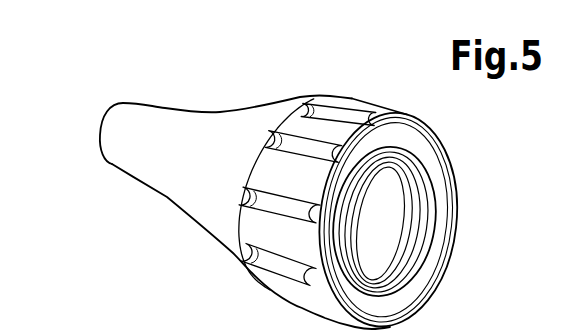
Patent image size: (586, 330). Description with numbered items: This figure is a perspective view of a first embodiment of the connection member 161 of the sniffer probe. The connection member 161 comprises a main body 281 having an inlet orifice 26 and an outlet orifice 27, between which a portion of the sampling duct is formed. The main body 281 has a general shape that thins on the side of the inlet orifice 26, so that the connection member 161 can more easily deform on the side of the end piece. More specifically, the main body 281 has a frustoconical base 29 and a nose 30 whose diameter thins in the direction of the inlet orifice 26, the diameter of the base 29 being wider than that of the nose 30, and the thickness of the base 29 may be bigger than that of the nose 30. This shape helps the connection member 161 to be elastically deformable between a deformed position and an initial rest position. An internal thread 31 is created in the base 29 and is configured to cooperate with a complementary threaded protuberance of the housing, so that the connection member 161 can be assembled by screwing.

The connection member 161 is at (201, 91).
The inlet orifice 26 is at (101, 127).
The nose 30 is at (164, 191).
The main body 281 is at (253, 117).
The frustoconical base 29 is at (368, 111).
The internal thread 31 is at (373, 259).
The outlet orifice 27 is at (394, 207).